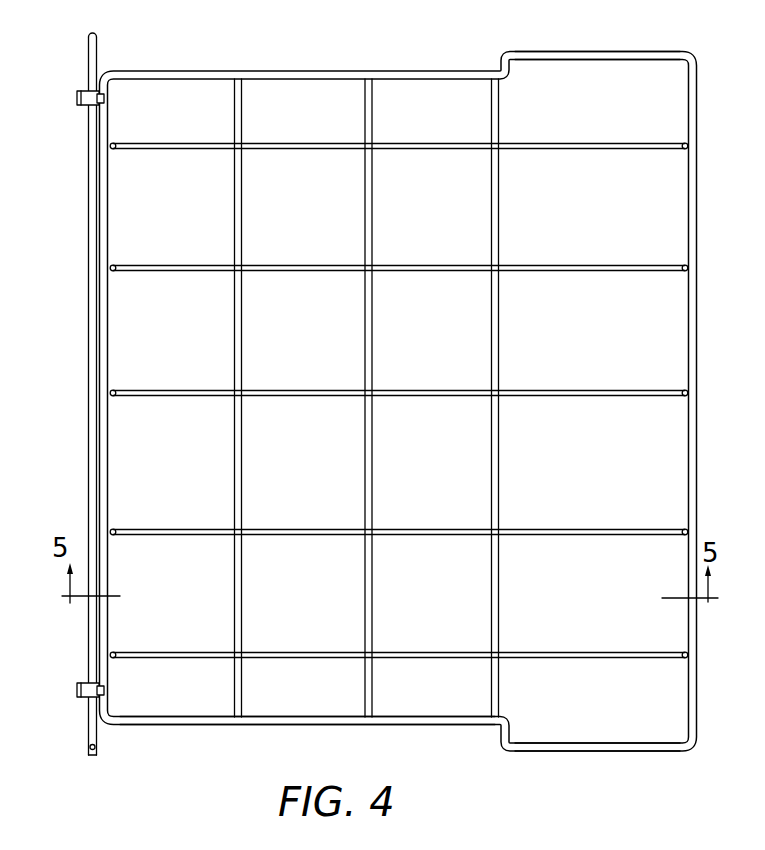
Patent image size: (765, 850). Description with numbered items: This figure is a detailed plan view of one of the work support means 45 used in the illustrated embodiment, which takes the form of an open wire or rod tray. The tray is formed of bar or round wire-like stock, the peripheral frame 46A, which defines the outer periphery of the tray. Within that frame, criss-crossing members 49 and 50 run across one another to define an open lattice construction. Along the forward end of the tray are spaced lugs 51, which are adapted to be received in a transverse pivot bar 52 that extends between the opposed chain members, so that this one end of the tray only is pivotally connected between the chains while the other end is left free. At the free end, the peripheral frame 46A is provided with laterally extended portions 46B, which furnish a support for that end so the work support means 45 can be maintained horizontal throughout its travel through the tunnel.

The work support means 45 is at (243, 728).
The peripheral frame 46A is at (314, 725).
The laterally extended portions 46B is at (566, 52).
The criss-crossing members 49 is at (499, 574).
The criss-crossing members 50 is at (427, 529).
The spaced lugs 51 is at (80, 97).
The transverse pivot bar 52 is at (88, 393).